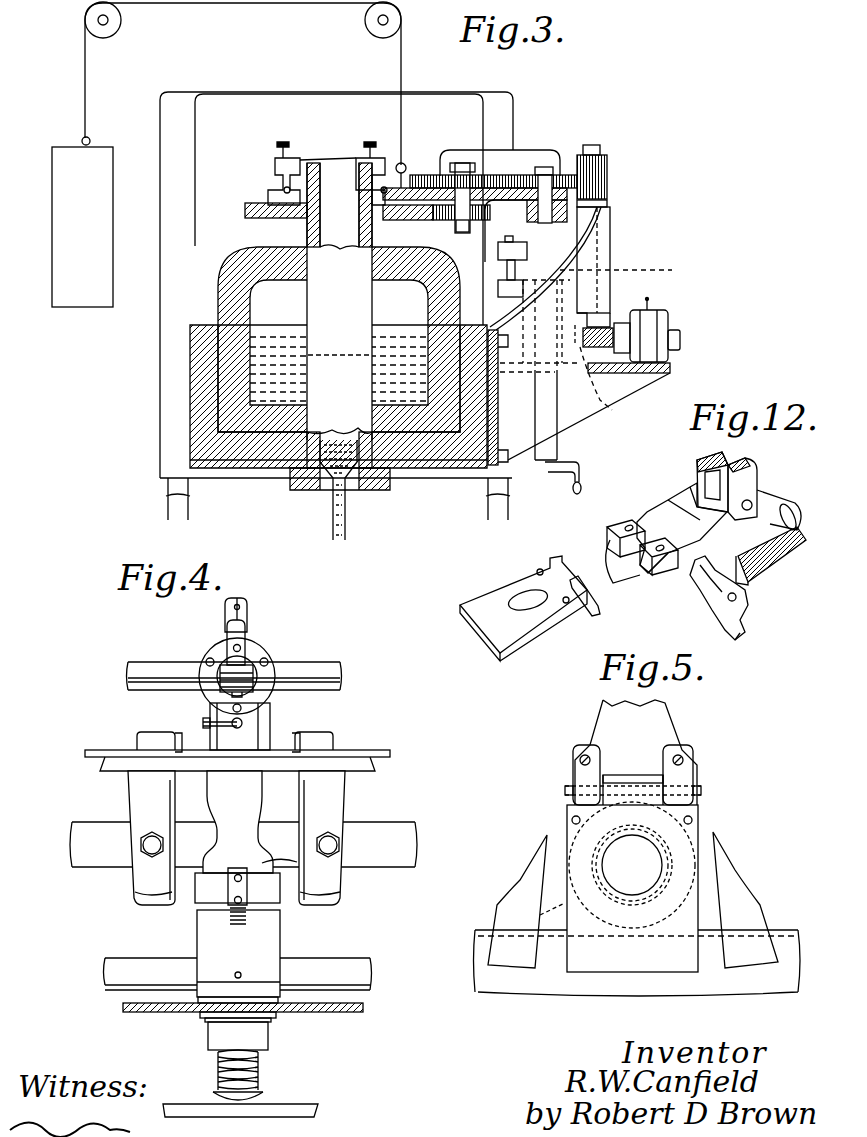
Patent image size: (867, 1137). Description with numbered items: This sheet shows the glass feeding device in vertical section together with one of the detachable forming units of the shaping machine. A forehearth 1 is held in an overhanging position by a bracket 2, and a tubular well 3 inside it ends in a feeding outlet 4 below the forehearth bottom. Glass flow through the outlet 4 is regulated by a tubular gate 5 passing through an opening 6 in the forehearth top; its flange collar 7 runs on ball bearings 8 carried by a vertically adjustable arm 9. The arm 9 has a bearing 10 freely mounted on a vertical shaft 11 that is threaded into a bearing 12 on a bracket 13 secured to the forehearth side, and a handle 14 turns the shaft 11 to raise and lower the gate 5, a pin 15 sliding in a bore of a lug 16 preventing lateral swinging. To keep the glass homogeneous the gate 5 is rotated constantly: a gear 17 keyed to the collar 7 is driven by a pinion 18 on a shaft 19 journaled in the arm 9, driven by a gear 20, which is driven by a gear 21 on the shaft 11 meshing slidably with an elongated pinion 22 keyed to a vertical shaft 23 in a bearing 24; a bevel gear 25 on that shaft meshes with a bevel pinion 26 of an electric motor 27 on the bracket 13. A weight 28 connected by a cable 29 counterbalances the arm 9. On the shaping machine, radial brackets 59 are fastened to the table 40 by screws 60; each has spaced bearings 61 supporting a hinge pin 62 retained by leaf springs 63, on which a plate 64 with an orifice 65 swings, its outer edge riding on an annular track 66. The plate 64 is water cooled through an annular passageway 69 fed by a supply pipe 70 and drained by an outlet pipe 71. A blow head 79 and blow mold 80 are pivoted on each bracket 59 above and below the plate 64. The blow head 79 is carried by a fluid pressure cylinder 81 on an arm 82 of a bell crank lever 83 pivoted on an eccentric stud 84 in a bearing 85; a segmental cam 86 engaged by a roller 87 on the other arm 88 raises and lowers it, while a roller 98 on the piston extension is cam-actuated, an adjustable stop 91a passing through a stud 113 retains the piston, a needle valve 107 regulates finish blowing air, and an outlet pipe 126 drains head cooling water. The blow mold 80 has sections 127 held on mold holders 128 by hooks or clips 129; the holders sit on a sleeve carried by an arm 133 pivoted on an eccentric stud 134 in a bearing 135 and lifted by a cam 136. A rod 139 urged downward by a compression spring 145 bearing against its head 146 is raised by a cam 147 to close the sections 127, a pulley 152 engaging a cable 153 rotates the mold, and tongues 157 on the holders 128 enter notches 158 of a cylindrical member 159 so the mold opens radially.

In FIG. 3, the forehearth 1 is at (205, 376).
In FIG. 3, the bracket 2 is at (190, 510).
In FIG. 3, the tubular well 3 is at (363, 350).
In FIG. 3, the feeding outlet 4 is at (325, 480).
In FIG. 3, the tubular gate 5 is at (307, 310).
In FIG. 3, the opening 6 is at (306, 244).
In FIG. 3, the flange collar 7 is at (386, 176).
In FIG. 3, the ball bearings 8 is at (275, 182).
In FIG. 3, the vertically adjustable arm 9 is at (418, 188).
In FIG. 3, the bearing 10 is at (598, 212).
In FIG. 3, the vertical shaft 11 is at (608, 250).
In FIG. 3, the bearing 12 is at (602, 408).
In FIG. 3, the bracket 13 is at (575, 418).
In FIG. 3, the handle 14 is at (583, 490).
In FIG. 3, the pin 15 is at (490, 252).
In FIG. 3, the lug 16 is at (498, 288).
In FIG. 3, the gear 17 is at (245, 208).
In FIG. 3, the pinion 18 is at (450, 225).
In FIG. 3, the shaft 19 is at (452, 185).
In FIG. 3, the gear 20 is at (490, 178).
In FIG. 3, the gear 21 is at (530, 176).
In FIG. 3, the elongated pinion 22 is at (608, 165).
In FIG. 3, the vertical shaft 23 is at (597, 317).
In FIG. 3, the bearing 24 is at (612, 232).
In FIG. 3, the bevel gear 25 is at (648, 300).
In FIG. 3, the bevel pinion 26 is at (630, 388).
In FIG. 3, the electric motor 27 is at (680, 332).
In FIG. 3, the weight 28 is at (105, 150).
In FIG. 3, the cable 29 is at (310, 12).
In FIG. 12, the table 40 is at (752, 565).
In FIG. 4, the table 40 is at (385, 860).
In FIG. 12, the bracket 59 is at (700, 568).
In FIG. 4, the bracket 59 is at (128, 795).
In FIG. 5, the bracket 59 is at (660, 728).
In FIG. 12, the screws 60 is at (710, 608).
In FIG. 4, the screws 60 is at (142, 855).
In FIG. 12, the bearings 61 is at (652, 562).
In FIG. 5, the bearings 61 is at (573, 778).
In FIG. 12, the hinge pin 62 is at (596, 608).
In FIG. 5, the hinge pin 62 is at (565, 790).
In FIG. 12, the leaf springs 63 is at (610, 533).
In FIG. 5, the leaf springs 63 is at (573, 760).
In FIG. 12, the plate 64 is at (512, 633).
In FIG. 4, the plate 64 is at (165, 750).
In FIG. 5, the plate 64 is at (515, 882).
In FIG. 12, the orifice 65 is at (540, 612).
In FIG. 5, the orifice 65 is at (610, 858).
In FIG. 4, the annular track 66 is at (362, 766).
In FIG. 5, the annular track 66 is at (552, 995).
In FIG. 5, the annular passageway 69 is at (542, 914).
In FIG. 12, the water supply pipe 70 is at (538, 570).
In FIG. 5, the water supply pipe 70 is at (572, 820).
In FIG. 12, the outlet pipe 71 is at (568, 604).
In FIG. 5, the outlet pipe 71 is at (692, 820).
In FIG. 4, the blow head 79 is at (262, 722).
In FIG. 4, the blow mold 80 is at (238, 822).
In FIG. 4, the fluid pressure cylinder 81 is at (213, 648).
In FIG. 12, the arm 82 is at (748, 472).
In FIG. 4, the bell crank lever 83 is at (262, 740).
In FIG. 12, the eccentric stud 84 is at (752, 502).
In FIG. 12, the bearing 85 is at (697, 482).
In FIG. 4, the bearing 85 is at (140, 732).
In FIG. 4, the segmental cam 86 is at (320, 676).
In FIG. 12, the roller 87 is at (782, 538).
In FIG. 12, the arm 88 is at (778, 506).
In FIG. 4, the adjustable stop 91a is at (242, 648).
In FIG. 4, the roller 98 is at (253, 672).
In FIG. 4, the needle valve 107 is at (240, 605).
In FIG. 4, the stud 113 is at (225, 622).
In FIG. 4, the outlet pipe 126 is at (203, 718).
In FIG. 4, the sections 127 is at (285, 862).
In FIG. 4, the mold holders 128 is at (200, 885).
In FIG. 4, the hooks or clips 129 is at (248, 890).
In FIG. 12, the arm 133 is at (742, 635).
In FIG. 12, the eccentric stud 134 is at (737, 600).
In FIG. 4, the bearing 135 is at (135, 902).
In FIG. 4, the cam 136 is at (355, 975).
In FIG. 4, the rod 139 is at (262, 1078).
In FIG. 4, the compression spring 145 is at (265, 1052).
In FIG. 4, the head 146 is at (265, 1096).
In FIG. 4, the cam 147 is at (318, 1110).
In FIG. 4, the pulley 152 is at (210, 1022).
In FIG. 4, the cable 153 is at (135, 1012).
In FIG. 4, the tongues 157 is at (235, 915).
In FIG. 4, the notches 158 is at (250, 918).
In FIG. 4, the cylindrical member 159 is at (196, 960).